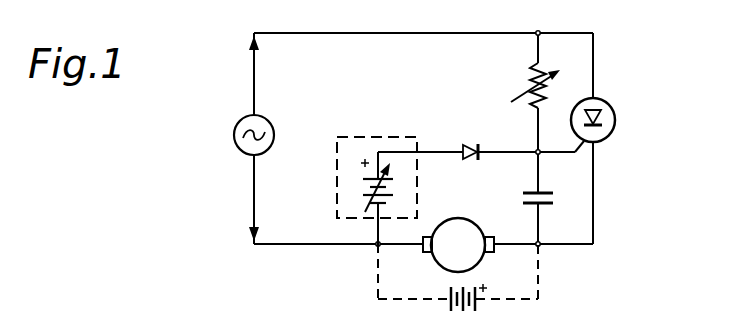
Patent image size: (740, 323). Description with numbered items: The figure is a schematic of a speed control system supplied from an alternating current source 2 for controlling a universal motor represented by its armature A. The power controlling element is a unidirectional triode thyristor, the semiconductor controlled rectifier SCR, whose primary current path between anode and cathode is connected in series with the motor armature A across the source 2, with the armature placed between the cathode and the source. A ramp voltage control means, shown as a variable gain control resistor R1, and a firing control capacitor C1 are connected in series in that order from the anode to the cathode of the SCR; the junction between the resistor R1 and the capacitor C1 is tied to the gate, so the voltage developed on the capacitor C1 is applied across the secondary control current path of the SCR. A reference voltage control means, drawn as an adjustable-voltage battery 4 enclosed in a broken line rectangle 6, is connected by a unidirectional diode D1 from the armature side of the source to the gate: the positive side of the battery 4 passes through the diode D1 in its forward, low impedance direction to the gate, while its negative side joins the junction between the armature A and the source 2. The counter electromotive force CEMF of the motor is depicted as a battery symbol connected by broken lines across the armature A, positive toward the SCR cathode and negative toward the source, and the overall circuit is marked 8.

The alternating current source 2 is at (240, 124).
The adjustable-voltage battery 4 is at (360, 183).
The broken line rectangle 6 is at (369, 131).
The motor control circuit 8 is at (275, 317).
The unidirectional diode D1 is at (472, 143).
The variable gain control resistor R1 is at (533, 82).
The semiconductor controlled rectifier SCR is at (615, 117).
The firing control capacitor C1 is at (555, 197).
The motor armature A is at (481, 227).
The counter electromotive force CEMF is at (458, 283).